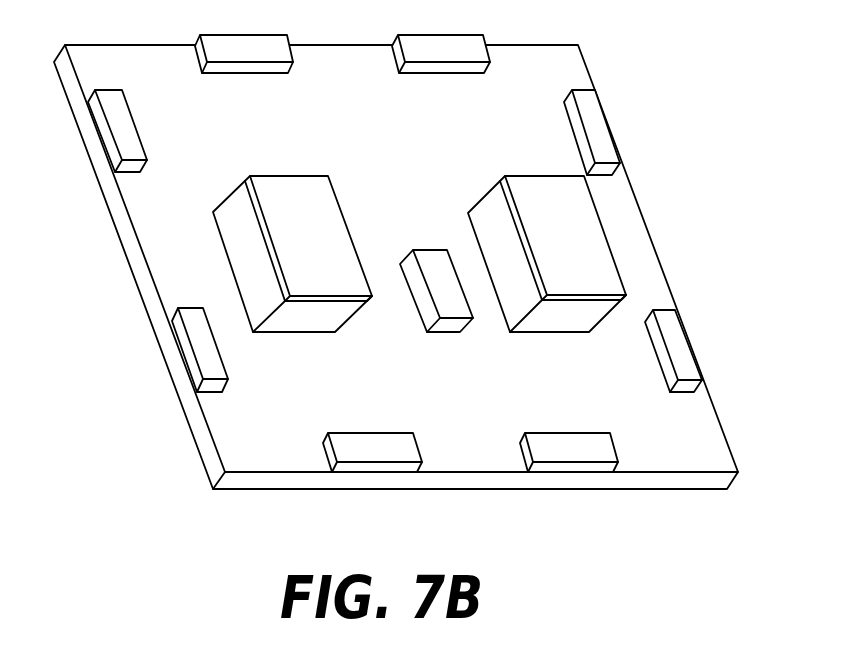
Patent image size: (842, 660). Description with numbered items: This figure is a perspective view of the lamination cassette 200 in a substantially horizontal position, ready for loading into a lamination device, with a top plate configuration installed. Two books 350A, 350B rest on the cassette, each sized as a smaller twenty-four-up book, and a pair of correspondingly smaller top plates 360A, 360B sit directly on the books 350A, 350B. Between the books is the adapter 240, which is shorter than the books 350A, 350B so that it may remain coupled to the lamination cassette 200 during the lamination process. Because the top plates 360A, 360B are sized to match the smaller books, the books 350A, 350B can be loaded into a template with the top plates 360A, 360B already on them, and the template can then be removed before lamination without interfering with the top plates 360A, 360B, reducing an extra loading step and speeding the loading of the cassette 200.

The lamination cassette 200 is at (635, 252).
The adapter 240 is at (448, 323).
The book 350A is at (206, 261).
The book 350B is at (621, 365).
The top plate 360A is at (282, 216).
The top plate 360B is at (607, 275).